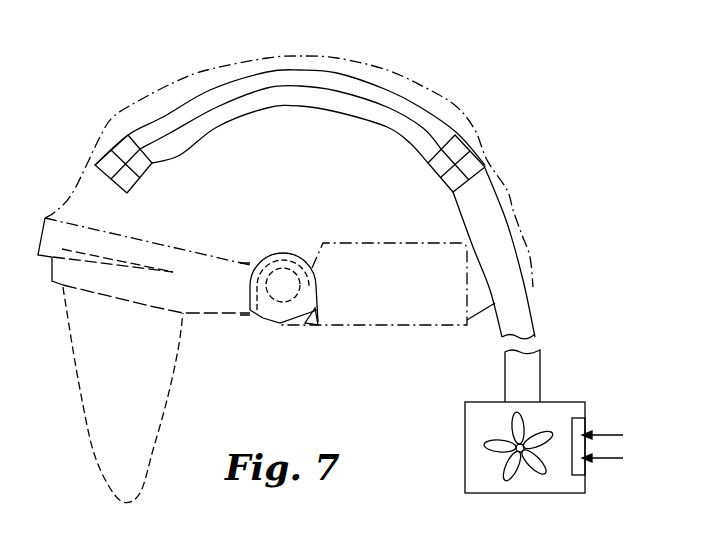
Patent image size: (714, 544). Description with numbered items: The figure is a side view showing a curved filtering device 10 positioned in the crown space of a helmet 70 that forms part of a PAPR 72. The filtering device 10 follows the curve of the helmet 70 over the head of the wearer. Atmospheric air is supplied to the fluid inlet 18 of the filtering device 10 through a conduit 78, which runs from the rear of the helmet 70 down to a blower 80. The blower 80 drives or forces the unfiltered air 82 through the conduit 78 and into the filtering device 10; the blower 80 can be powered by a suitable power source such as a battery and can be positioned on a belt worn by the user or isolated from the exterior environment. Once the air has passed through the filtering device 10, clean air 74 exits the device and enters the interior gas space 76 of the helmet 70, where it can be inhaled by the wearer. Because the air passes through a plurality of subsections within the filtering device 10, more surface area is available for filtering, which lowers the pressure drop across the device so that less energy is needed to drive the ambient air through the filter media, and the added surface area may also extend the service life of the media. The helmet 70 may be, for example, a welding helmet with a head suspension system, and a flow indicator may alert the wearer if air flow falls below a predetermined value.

The filtering device 10 is at (402, 100).
The fluid inlet 18 is at (482, 185).
The helmet 70 is at (472, 108).
The PAPR 72 is at (492, 56).
The clean air 74 is at (90, 218).
The interior gas space 76 is at (134, 379).
The conduit 78 is at (506, 258).
The blower 80 is at (573, 405).
The unfiltered air 82 is at (606, 462).